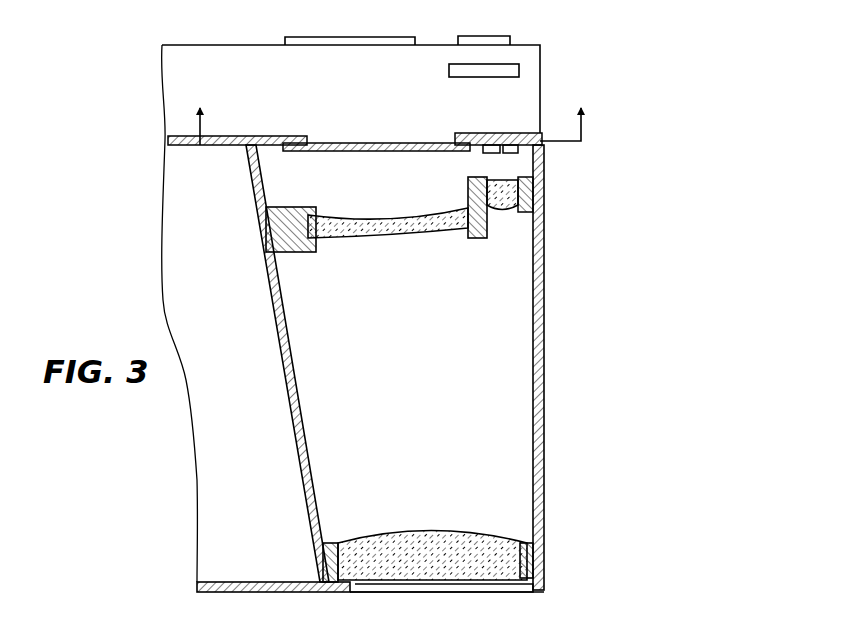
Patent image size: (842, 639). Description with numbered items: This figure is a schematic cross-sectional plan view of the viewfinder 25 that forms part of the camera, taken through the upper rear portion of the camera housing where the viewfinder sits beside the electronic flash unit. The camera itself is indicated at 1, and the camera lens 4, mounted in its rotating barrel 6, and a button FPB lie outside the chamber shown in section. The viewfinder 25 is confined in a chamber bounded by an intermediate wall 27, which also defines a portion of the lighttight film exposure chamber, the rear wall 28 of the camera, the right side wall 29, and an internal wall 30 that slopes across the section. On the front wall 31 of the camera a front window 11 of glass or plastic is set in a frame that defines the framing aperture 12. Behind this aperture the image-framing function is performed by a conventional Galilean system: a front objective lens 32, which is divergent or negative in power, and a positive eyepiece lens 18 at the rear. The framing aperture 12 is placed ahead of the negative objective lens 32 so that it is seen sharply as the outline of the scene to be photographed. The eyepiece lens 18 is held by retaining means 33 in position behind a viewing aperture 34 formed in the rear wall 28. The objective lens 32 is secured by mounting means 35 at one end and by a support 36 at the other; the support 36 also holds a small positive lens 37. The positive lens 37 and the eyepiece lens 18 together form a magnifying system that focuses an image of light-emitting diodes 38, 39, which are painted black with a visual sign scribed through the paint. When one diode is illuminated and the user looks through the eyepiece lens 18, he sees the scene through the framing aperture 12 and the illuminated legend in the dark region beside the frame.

The camera module 1 is at (552, 365).
The barrel 6 is at (360, 42).
The focus push button FPB is at (490, 38).
The lens 4 is at (390, 113).
The front wall 31 is at (266, 135).
The front window 11 is at (395, 142).
The framing aperture 12 is at (455, 133).
The light-emitting diode 38 is at (490, 154).
The light-emitting diode 39 is at (535, 152).
The intermediate wall 27 is at (559, 367).
The right side wall 29 is at (545, 434).
The internal wall 30 is at (287, 363).
The viewfinder 25 is at (286, 408).
The mounting means 35 is at (297, 254).
The front objective lens 32 is at (412, 232).
The support 36 is at (478, 242).
The positive lens 37 is at (505, 212).
The rear wall 28 is at (290, 591).
The retaining means 33 is at (330, 542).
The eyepiece lens 18 is at (457, 532).
The viewing aperture 34 is at (510, 592).